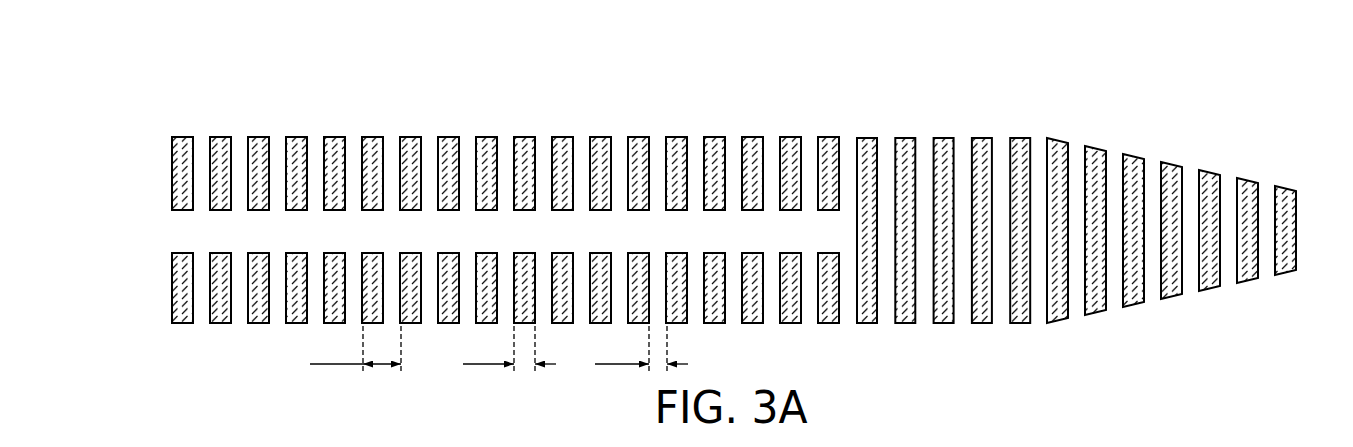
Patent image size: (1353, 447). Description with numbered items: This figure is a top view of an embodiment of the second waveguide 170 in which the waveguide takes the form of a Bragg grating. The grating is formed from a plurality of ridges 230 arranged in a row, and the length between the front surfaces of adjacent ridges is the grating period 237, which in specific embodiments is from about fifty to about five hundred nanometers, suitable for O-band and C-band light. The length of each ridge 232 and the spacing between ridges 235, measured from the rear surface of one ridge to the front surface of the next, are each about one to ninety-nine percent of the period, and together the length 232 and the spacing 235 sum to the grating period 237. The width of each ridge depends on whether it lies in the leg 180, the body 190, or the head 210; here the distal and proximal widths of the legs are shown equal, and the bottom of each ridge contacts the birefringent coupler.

The second waveguide 170 is at (112, 32).
The leg 180 is at (173, 56).
The body 190 is at (1046, 56).
The head 210 is at (1295, 56).
The ridges 230 is at (413, 128).
The grating period 237 is at (355, 348).
The length of each ridge 232 is at (509, 348).
The spacing between ridges 235 is at (641, 348).